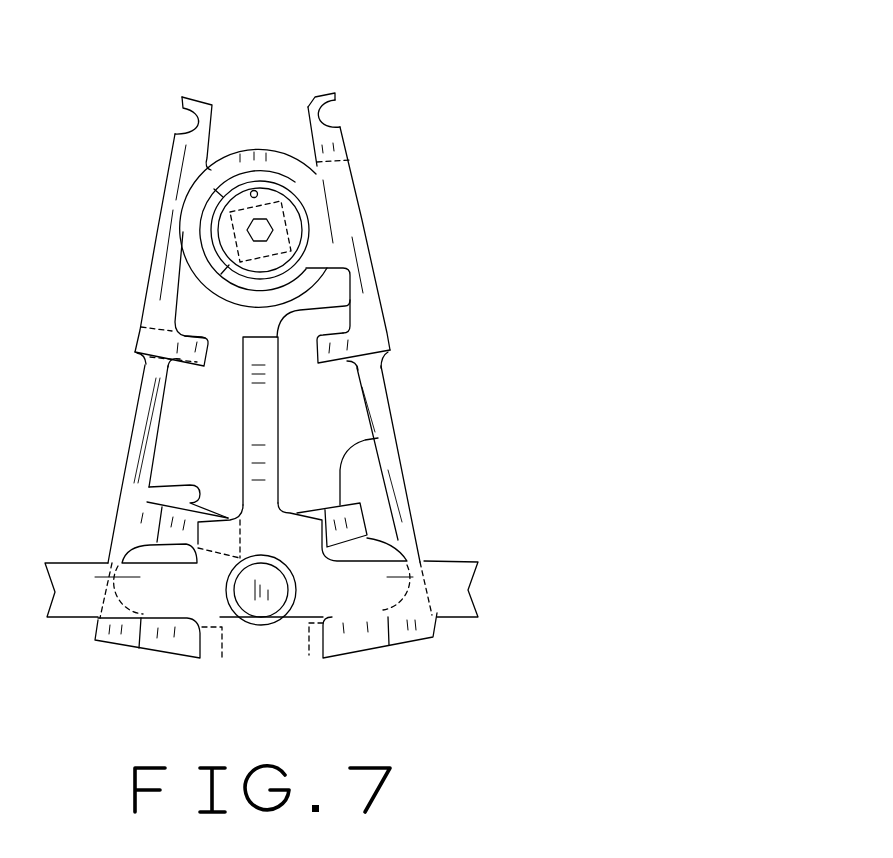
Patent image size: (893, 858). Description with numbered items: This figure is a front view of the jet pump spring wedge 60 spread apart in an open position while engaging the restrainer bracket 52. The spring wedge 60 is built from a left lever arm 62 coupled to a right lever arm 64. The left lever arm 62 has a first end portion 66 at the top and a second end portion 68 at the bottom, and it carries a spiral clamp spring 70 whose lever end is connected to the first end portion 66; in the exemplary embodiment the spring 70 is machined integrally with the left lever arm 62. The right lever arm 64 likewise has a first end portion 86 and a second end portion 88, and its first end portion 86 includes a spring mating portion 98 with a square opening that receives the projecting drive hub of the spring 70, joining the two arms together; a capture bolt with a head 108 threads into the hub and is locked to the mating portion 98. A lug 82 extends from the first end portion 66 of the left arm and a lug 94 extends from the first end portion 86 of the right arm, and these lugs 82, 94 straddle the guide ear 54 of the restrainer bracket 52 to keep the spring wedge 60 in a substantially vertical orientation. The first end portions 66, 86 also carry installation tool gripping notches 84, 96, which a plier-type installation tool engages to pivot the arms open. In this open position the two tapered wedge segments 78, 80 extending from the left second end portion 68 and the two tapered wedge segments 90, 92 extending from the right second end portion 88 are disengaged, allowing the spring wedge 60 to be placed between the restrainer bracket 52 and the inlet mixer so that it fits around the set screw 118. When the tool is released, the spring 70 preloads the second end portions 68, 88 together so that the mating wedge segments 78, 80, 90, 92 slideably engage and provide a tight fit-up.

The restrainer bracket 52 is at (450, 560).
The guide ear 54 is at (352, 300).
The jet pump spring wedge 60 is at (460, 167).
The left lever arm 62 is at (193, 97).
The right lever arm 64 is at (323, 93).
The first end portion 66 is at (158, 222).
The second end portion 68 is at (128, 452).
The spiral clamp spring 70 is at (255, 151).
The tapered wedge segment 78 is at (160, 486).
The tapered wedge segment 80 is at (160, 653).
The lug 82 is at (163, 390).
The installation tool gripping notch 84 is at (180, 121).
The first end portion 86 is at (368, 258).
The second end portion 88 is at (408, 518).
The tapered wedge segment 90 is at (377, 436).
The tapered wedge segment 92 is at (360, 653).
The lug 94 is at (355, 385).
The installation tool gripping notch 96 is at (337, 117).
The spring mating portion 98 is at (333, 193).
The head 108 is at (306, 233).
The set screw 118 is at (275, 622).